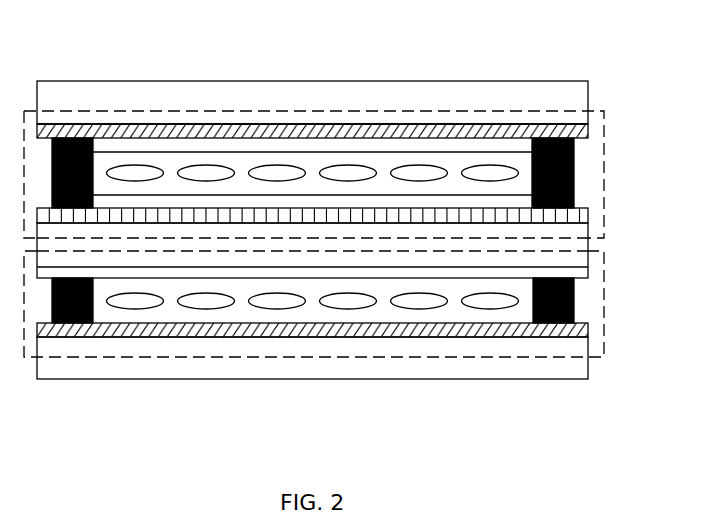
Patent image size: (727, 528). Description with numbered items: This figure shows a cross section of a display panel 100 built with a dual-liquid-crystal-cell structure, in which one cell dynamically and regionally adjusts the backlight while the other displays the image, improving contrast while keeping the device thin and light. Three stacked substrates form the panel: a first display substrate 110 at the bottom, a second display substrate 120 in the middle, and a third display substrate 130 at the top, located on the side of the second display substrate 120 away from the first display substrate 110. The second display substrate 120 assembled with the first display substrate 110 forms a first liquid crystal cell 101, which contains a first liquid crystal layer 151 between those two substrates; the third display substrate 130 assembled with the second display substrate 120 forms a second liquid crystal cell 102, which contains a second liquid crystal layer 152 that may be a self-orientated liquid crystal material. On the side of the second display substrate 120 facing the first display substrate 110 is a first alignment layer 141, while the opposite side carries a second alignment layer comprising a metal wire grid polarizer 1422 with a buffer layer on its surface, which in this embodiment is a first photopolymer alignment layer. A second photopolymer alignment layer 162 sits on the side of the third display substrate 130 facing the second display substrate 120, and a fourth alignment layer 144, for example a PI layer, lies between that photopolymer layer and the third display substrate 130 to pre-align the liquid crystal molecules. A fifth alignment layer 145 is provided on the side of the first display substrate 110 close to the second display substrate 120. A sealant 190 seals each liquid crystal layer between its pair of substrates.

The display panel 100 is at (329, 455).
The first liquid crystal cell 101 is at (604, 287).
The second liquid crystal cell 102 is at (604, 168).
The first display substrate 110 is at (80, 363).
The second display substrate 120 is at (437, 255).
The third display substrate 130 is at (139, 97).
The first alignment layer 141 is at (327, 270).
The fourth alignment layer 144 is at (150, 329).
The fifth alignment layer 145 is at (546, 128).
The first liquid crystal layer 151 is at (243, 318).
The second liquid crystal layer 152 is at (193, 178).
The second photopolymer alignment layer 162 is at (366, 147).
The sealant 190 is at (72, 138).
The metal wire grid polarizer 1422 is at (247, 217).